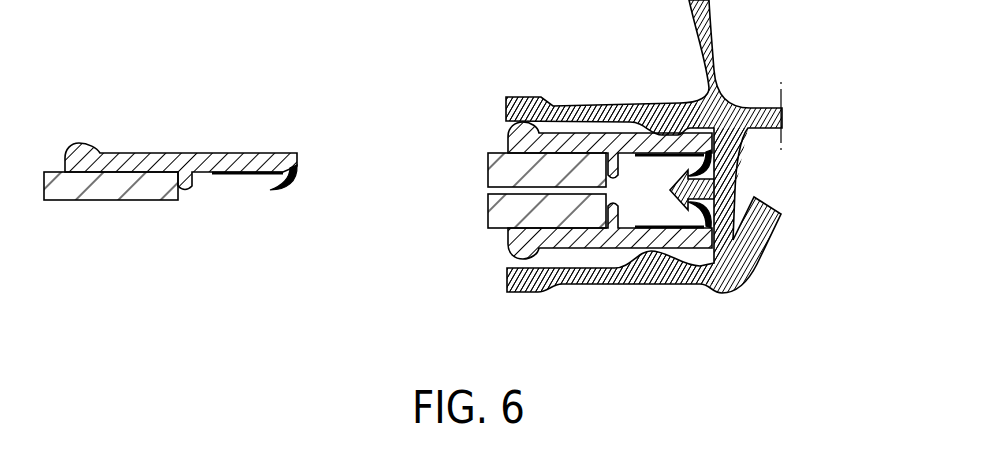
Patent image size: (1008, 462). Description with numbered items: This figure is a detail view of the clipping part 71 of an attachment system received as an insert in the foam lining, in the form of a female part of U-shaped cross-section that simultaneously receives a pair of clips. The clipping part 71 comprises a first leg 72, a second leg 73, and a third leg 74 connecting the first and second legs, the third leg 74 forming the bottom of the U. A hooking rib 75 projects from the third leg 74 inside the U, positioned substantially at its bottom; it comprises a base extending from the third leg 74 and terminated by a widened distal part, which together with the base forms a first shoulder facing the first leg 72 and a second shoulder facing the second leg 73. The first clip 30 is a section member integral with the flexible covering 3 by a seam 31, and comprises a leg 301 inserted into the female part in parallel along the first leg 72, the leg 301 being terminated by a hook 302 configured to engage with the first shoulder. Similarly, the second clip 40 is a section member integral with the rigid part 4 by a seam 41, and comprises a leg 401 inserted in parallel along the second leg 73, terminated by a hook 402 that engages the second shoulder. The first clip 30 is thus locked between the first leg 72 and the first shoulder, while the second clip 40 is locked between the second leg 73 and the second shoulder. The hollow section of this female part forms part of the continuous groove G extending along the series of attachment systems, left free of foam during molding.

The flexible covering 3 is at (121, 185).
The rigid part 4 is at (500, 212).
The first clip 30 is at (595, 145).
The seam 31 is at (146, 163).
The second clip 40 is at (611, 236).
The seam 41 is at (583, 238).
The clipping part 71 is at (478, 88).
The first leg 72 is at (577, 105).
The second leg 73 is at (661, 286).
The third leg 74 is at (730, 157).
The hooking rib 75 is at (707, 188).
The leg 301 is at (222, 153).
The hook 302 is at (293, 178).
The leg 401 is at (560, 233).
The hook 402 is at (710, 233).
The continuous groove G is at (652, 195).